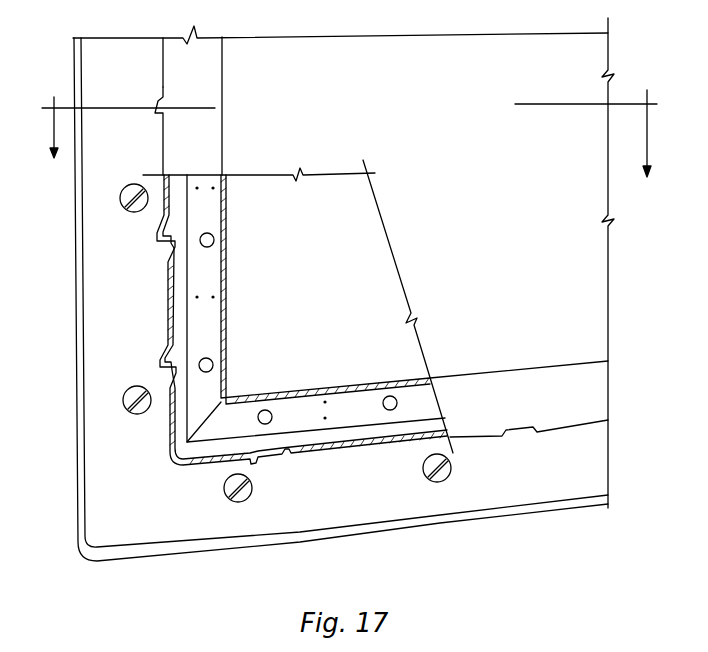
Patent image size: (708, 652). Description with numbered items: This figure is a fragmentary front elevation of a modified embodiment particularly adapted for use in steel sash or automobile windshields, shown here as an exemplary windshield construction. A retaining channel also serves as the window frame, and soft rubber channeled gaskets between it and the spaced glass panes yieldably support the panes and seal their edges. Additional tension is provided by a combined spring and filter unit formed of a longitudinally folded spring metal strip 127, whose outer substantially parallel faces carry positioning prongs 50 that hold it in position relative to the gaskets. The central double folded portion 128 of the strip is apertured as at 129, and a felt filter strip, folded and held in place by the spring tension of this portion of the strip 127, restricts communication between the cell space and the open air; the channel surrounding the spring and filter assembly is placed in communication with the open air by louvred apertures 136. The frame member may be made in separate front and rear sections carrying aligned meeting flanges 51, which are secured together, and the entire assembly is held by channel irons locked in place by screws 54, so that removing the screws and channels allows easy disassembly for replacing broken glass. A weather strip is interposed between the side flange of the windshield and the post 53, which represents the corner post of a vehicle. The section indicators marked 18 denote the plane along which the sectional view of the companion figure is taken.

The section line for FIG. 18 is at (348, 134).
The positioning prongs 50 is at (196, 298).
The meeting flanges 51 is at (82, 176).
The post 53 is at (73, 50).
The screws 54 is at (120, 200).
The spring metal strip 127 is at (187, 331).
The central double folded portion 128 is at (227, 241).
The apertures 129 is at (213, 234).
The louvred apertures 136 is at (155, 234).